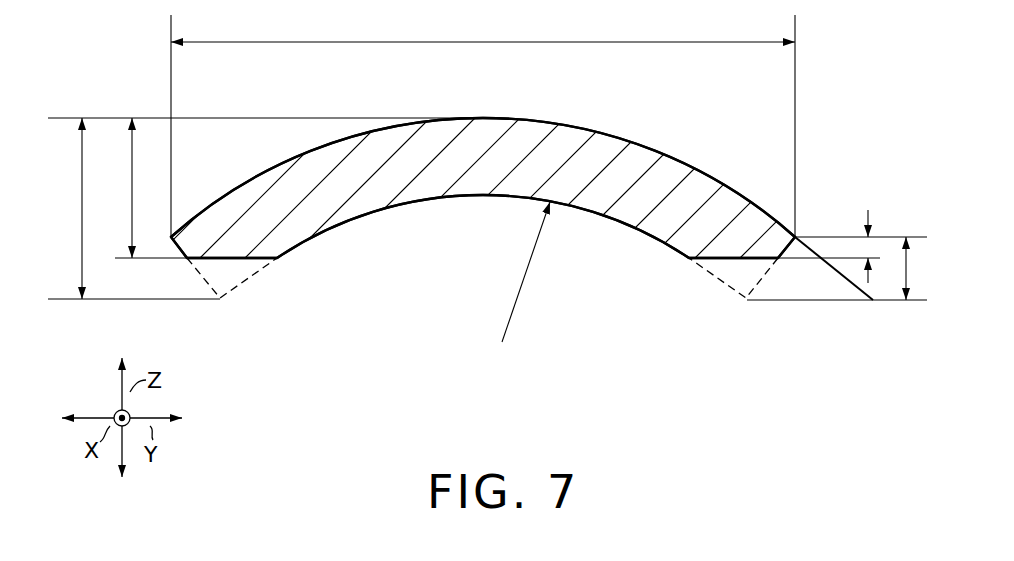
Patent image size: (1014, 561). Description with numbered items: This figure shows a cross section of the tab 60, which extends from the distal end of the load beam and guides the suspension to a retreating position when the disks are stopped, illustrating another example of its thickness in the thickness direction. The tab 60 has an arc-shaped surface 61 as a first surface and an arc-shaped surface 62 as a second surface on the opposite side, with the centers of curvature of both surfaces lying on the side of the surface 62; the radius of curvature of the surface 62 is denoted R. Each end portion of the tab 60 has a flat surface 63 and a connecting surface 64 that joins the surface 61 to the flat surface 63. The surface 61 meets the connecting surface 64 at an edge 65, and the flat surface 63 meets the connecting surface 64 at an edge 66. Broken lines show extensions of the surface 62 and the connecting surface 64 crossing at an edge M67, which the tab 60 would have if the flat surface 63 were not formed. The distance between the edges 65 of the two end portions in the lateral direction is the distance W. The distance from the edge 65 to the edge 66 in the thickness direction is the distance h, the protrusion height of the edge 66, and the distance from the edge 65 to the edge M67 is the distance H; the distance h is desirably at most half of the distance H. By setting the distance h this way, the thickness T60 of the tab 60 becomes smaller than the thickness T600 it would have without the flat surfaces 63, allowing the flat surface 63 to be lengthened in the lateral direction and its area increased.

The tab 60 is at (705, 107).
The arc-shaped surface 61 is at (595, 132).
The arc-shaped surface 62 is at (607, 213).
The flat surface 63 is at (227, 259).
The connecting surface 64 is at (178, 243).
The edge 65 is at (798, 235).
The edge 66 is at (782, 262).
The edge M67 is at (221, 301).
The distance W is at (483, 26).
The thickness T600 is at (82, 176).
The thickness T60 is at (132, 176).
The distance h is at (868, 247).
The distance H is at (908, 263).
The radius of curvature R is at (520, 297).